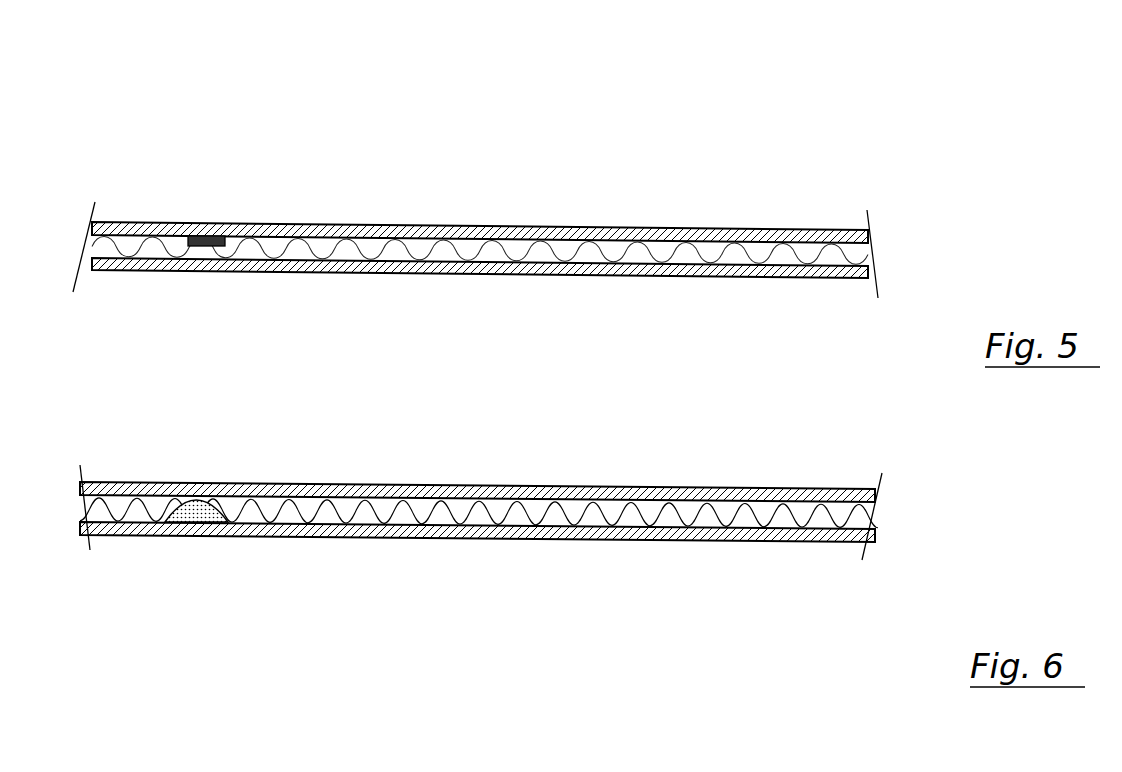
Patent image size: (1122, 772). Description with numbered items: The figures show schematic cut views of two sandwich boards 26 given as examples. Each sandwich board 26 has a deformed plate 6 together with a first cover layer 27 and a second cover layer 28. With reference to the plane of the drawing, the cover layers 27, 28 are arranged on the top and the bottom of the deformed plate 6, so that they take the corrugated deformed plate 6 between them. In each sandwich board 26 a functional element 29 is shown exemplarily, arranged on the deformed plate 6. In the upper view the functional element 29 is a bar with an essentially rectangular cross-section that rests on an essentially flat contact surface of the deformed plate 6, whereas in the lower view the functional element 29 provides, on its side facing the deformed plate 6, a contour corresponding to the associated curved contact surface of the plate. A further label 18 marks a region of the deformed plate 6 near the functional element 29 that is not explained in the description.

In FIG. 5, the deformed plate 6 is at (528, 248).
In FIG. 6, the deformed plate 6 is at (552, 515).
In FIG. 5, the defect region 18 is at (235, 242).
In FIG. 6, the defect region 18 is at (222, 513).
In FIG. 5, the sandwich board 26 is at (498, 208).
In FIG. 6, the sandwich board 26 is at (479, 559).
In FIG. 5, the first cover layer 27 is at (437, 225).
In FIG. 5, the second cover layer 28 is at (373, 266).
In FIG. 6, the second cover layer 28 is at (451, 538).
In FIG. 5, the functional element 29 is at (200, 246).
In FIG. 6, the functional element 29 is at (197, 508).